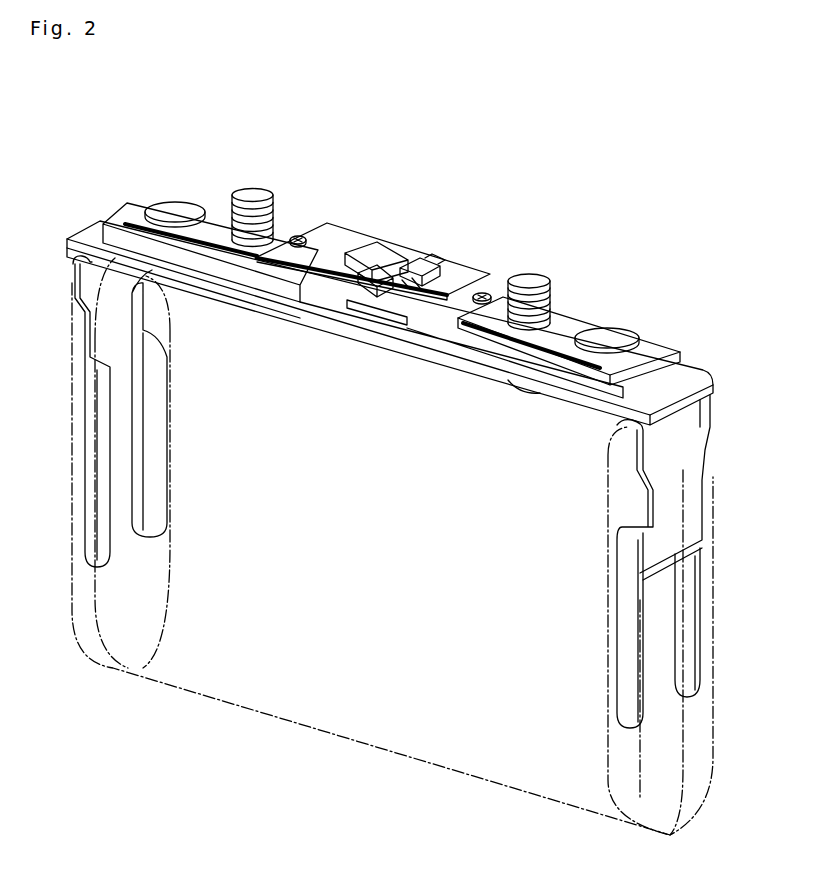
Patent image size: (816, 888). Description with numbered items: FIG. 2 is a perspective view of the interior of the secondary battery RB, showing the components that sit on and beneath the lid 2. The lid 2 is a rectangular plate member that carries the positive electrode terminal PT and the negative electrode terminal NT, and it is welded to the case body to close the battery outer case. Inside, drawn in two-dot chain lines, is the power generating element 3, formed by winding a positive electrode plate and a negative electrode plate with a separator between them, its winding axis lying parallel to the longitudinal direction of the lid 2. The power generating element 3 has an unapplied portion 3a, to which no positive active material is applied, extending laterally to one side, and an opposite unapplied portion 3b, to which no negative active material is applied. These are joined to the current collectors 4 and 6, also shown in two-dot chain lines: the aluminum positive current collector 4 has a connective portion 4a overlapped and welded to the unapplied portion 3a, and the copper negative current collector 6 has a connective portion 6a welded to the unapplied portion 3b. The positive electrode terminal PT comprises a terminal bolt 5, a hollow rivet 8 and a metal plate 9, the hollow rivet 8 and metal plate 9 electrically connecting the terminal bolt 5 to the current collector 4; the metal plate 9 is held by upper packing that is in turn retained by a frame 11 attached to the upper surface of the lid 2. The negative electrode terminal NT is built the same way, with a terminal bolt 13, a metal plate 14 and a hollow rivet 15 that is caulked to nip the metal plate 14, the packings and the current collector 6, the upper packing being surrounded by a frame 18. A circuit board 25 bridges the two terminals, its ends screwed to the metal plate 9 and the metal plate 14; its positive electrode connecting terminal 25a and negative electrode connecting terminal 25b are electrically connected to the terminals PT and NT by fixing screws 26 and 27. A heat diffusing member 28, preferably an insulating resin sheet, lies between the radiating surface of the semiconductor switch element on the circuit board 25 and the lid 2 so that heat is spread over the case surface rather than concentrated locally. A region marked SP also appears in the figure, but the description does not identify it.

The lid 2 is at (695, 375).
The power generating element 3 is at (300, 727).
The unapplied portion 3a is at (86, 645).
The unapplied portion 3b is at (622, 790).
The positive current collector 4 is at (190, 489).
The connective portion 4a is at (160, 515).
The terminal bolt 5 is at (257, 189).
The negative current collector 6 is at (595, 620).
The connective portion 6a is at (620, 630).
The hollow rivet 8 is at (175, 210).
The metal plate 9 is at (222, 215).
The frame 11 is at (100, 246).
The terminal bolt 13 is at (533, 275).
The metal plate 14 is at (588, 316).
The hollow rivet 15 is at (608, 330).
The frame 18 is at (540, 368).
The circuit board 25 is at (421, 262).
The positive electrode connecting terminal 25a is at (345, 241).
The negative electrode connecting terminal 25b is at (481, 292).
The fixing screw 26 is at (299, 236).
The fixing screw 27 is at (488, 293).
The heat diffusing member 28 is at (395, 330).
The spring portion SP is at (135, 380).
The positive electrode terminal PT is at (198, 161).
The negative electrode terminal NT is at (605, 276).
The secondary battery RB is at (423, 155).